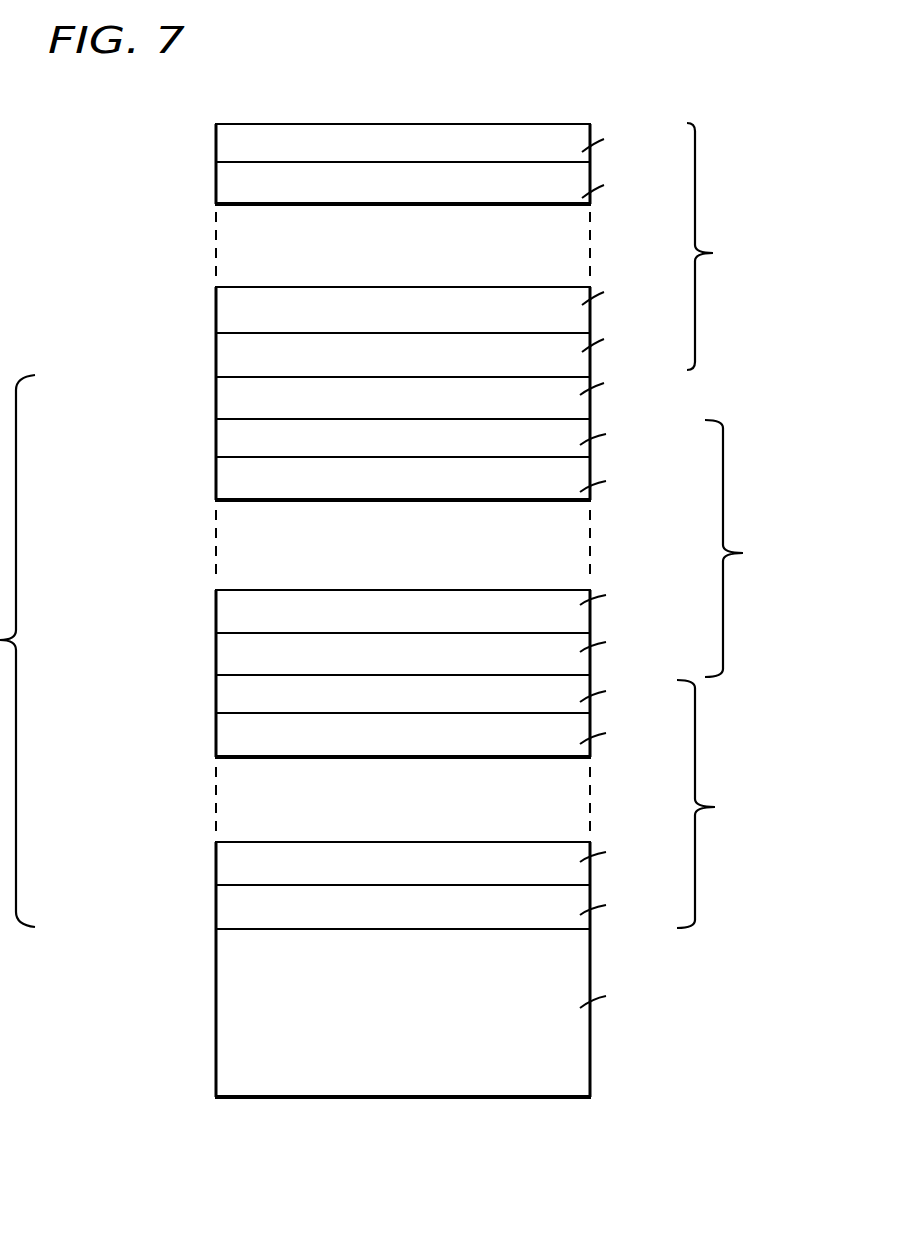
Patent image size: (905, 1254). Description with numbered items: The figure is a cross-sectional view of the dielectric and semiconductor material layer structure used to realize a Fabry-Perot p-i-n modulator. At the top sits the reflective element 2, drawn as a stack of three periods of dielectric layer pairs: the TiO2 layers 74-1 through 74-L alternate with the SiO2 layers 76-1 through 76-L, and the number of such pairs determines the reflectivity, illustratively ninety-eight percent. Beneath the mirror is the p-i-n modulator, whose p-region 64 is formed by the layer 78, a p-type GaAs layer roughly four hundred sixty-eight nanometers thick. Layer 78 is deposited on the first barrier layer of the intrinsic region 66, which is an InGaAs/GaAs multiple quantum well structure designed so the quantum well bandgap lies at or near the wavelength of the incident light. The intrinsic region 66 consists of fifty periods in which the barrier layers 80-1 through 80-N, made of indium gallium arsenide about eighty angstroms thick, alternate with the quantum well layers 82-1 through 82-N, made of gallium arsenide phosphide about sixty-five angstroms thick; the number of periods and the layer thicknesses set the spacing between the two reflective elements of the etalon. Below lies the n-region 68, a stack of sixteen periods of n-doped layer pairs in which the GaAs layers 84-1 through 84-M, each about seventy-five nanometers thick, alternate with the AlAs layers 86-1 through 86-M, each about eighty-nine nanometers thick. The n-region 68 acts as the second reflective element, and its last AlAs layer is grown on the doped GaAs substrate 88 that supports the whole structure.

The reflective element 2 is at (128, 123).
The TiO2 layer 74-1 is at (217, 143).
The SiO2 layer 76-1 is at (217, 186).
The TiO2 layer 74-L is at (224, 314).
The SiO2 layer 76-L is at (224, 358).
The p-region 64 is at (128, 376).
The p-type GaAs layer 78 is at (226, 406).
The intrinsic region 66 is at (120, 427).
The barrier layer 80-1 is at (217, 436).
The quantum well layer 82-1 is at (217, 484).
The barrier layer 80-N is at (234, 609).
The quantum well layer 82-N is at (234, 658).
The n-region 68 is at (128, 680).
The GaAs layer 84-1 is at (217, 691).
The AlAs layer 86-1 is at (217, 744).
The GaAs layer 84-M is at (236, 856).
The AlAs layer 86-M is at (236, 909).
The GaAs substrate 88 is at (236, 1004).